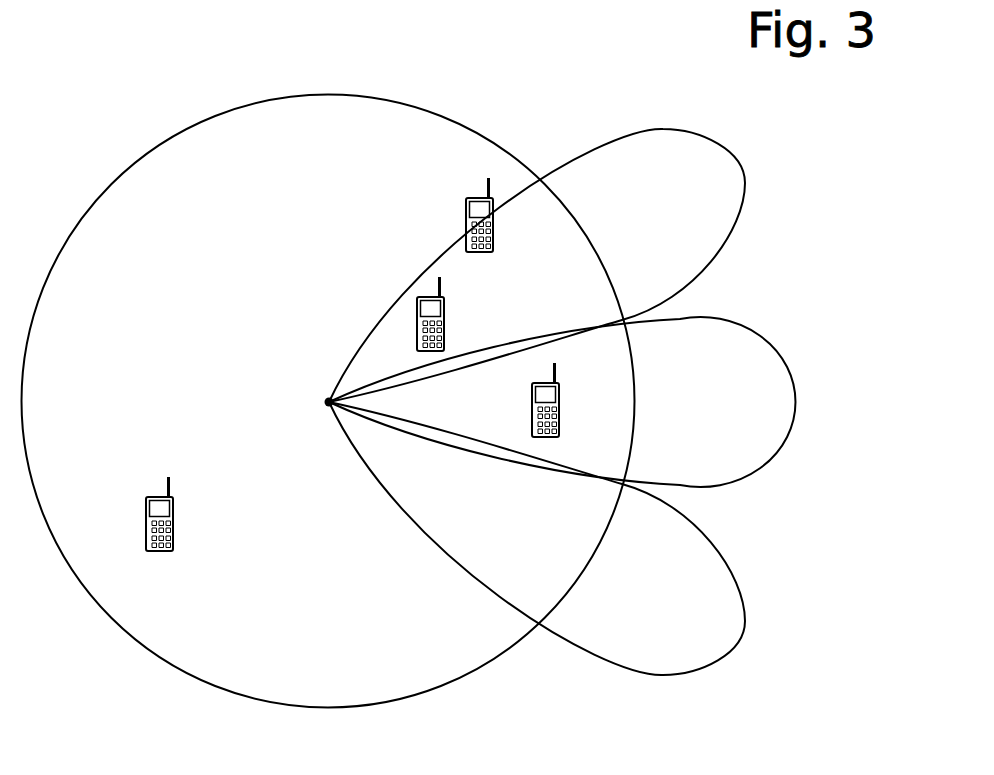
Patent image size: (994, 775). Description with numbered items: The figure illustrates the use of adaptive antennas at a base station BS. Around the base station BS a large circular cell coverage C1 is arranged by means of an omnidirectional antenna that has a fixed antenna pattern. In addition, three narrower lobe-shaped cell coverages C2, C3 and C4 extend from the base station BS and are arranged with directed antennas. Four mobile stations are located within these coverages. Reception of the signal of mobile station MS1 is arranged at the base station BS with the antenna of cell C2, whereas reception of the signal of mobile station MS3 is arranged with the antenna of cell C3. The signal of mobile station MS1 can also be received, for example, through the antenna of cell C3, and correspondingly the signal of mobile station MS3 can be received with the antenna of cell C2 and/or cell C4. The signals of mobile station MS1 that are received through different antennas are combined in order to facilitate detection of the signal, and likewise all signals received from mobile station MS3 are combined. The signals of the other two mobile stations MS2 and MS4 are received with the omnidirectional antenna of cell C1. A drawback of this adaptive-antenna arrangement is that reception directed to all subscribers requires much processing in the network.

The cell coverage C1 is at (208, 118).
The cell coverage C2 is at (708, 130).
The cell coverage C3 is at (778, 358).
The cell coverage C4 is at (741, 587).
The base station BS is at (309, 392).
The mobile station MS1 is at (444, 298).
The mobile station MS2 is at (173, 504).
The mobile station MS3 is at (558, 385).
The mobile station MS4 is at (493, 201).